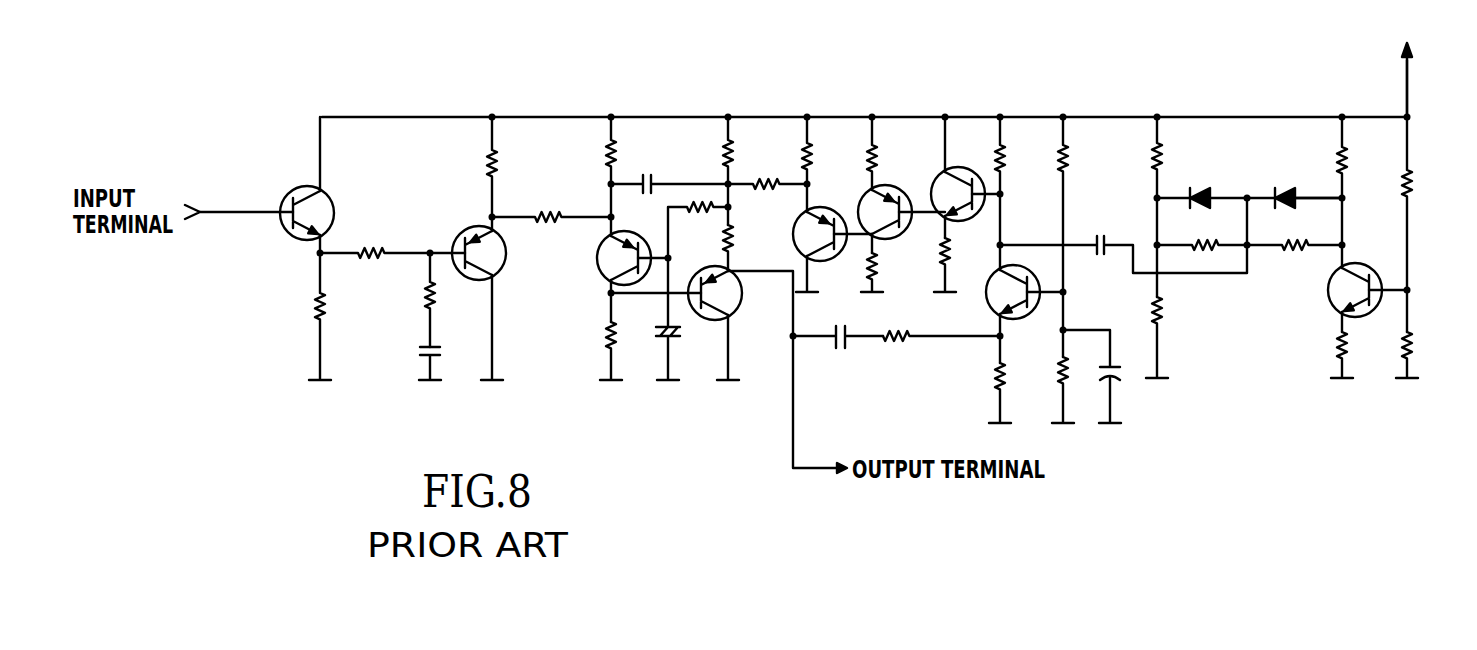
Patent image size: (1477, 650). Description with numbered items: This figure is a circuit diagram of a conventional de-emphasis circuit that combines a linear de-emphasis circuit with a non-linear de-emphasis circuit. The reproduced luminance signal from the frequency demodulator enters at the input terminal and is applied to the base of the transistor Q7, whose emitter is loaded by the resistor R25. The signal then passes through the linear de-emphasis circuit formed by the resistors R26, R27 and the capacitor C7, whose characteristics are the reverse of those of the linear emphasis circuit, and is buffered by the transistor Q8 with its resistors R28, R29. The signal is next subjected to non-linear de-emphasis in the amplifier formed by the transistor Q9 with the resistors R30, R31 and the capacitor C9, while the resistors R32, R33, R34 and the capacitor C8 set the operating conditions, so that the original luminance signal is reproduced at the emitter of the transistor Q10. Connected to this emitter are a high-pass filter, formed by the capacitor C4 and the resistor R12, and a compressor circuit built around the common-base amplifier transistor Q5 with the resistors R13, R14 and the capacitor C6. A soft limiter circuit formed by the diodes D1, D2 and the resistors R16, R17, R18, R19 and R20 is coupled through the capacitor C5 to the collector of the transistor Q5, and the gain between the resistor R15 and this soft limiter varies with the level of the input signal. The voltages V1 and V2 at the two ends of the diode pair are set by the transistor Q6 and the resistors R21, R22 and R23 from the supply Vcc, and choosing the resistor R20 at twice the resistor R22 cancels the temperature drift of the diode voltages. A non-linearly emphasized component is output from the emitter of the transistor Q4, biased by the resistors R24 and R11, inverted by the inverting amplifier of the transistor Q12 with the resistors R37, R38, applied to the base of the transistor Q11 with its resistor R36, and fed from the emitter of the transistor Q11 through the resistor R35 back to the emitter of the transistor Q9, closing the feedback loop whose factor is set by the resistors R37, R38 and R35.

The transistor Q7 is at (294, 188).
The resistor R25 is at (314, 303).
The resistor R26 is at (377, 246).
The resistor R27 is at (425, 297).
The capacitor C7 is at (420, 352).
The transistor Q8 is at (509, 257).
The resistor R28 is at (487, 166).
The resistor R29 is at (548, 212).
The resistor R30 is at (606, 157).
The transistor Q9 is at (598, 252).
The resistor R31 is at (607, 334).
The capacitor C9 is at (646, 178).
The resistor R33 is at (700, 210).
The capacitor C8 is at (658, 340).
The resistor R32 is at (725, 147).
The resistor R34 is at (734, 236).
The transistor Q10 is at (738, 308).
The resistor R35 is at (764, 180).
The resistor R36 is at (812, 158).
The transistor Q11 is at (820, 211).
The resistor R37 is at (874, 154).
The transistor Q12 is at (890, 188).
The resistor R38 is at (879, 273).
The transistor Q4 is at (965, 170).
The resistor R11 is at (951, 248).
The resistor R24 is at (1008, 158).
The transistor Q5 is at (987, 297).
The resistor R13 is at (995, 390).
The capacitor C4 is at (840, 350).
The resistor R12 is at (903, 345).
The resistor R15 is at (1068, 156).
The resistor R14 is at (1060, 370).
The capacitor C6 is at (1122, 378).
The capacitor C5 is at (1098, 255).
The resistor R16 is at (1152, 160).
The voltage V1 is at (1153, 200).
The resistor R17 is at (1163, 307).
The diode D1 is at (1200, 188).
The diode D2 is at (1290, 188).
The resistor R18 is at (1206, 240).
The resistor R19 is at (1292, 249).
The resistor R20 is at (1346, 163).
The voltage V2 is at (1346, 198).
The transistor Q6 is at (1330, 303).
The resistor R21 is at (1340, 347).
The resistor R22 is at (1412, 185).
The resistor R23 is at (1412, 338).
The supply voltage terminal Vcc is at (1427, 79).